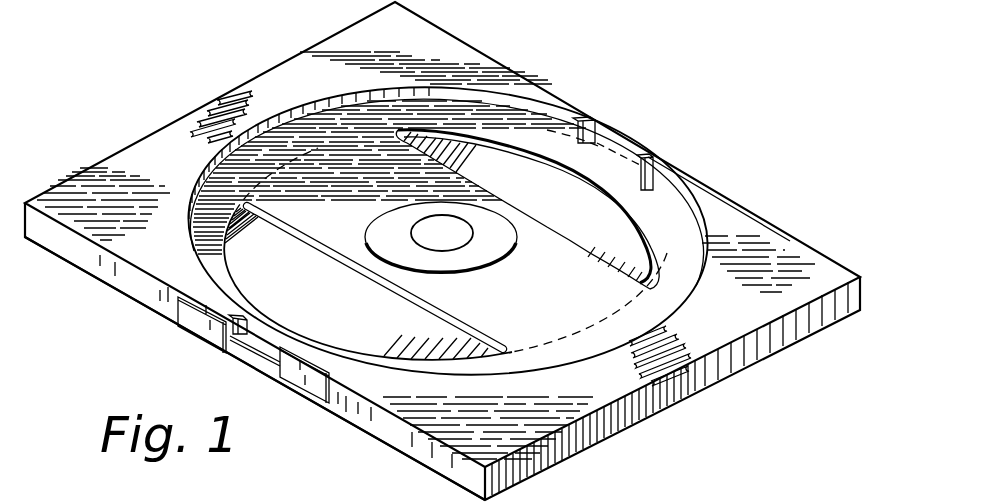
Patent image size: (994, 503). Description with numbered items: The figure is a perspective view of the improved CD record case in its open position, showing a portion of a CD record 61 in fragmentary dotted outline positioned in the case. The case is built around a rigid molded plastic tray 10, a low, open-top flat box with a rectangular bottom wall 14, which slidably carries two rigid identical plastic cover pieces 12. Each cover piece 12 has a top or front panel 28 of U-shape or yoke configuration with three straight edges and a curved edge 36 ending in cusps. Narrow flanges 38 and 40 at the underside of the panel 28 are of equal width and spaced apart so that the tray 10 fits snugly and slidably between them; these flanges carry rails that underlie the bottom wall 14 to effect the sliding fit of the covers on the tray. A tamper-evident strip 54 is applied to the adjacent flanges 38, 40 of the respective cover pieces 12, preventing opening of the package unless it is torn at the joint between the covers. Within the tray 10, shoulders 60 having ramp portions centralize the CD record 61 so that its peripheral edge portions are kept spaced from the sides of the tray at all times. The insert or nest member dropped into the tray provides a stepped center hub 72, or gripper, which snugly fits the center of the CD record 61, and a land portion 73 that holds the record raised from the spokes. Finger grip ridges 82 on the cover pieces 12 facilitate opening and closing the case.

The tray 10 is at (627, 160).
The cover pieces 12 is at (461, 35).
The bottom wall 14 is at (525, 158).
The top panel 28 is at (180, 155).
The curved edge 36 is at (327, 96).
The flange 38 is at (378, 437).
The flange 40 is at (148, 296).
The tamper-evident strip 54 is at (192, 324).
The shoulders 60 is at (601, 128).
The CD record 61 is at (637, 168).
The center hub 72 is at (463, 226).
The land portion 73 is at (500, 245).
The finger grip ridges 82 is at (222, 115).